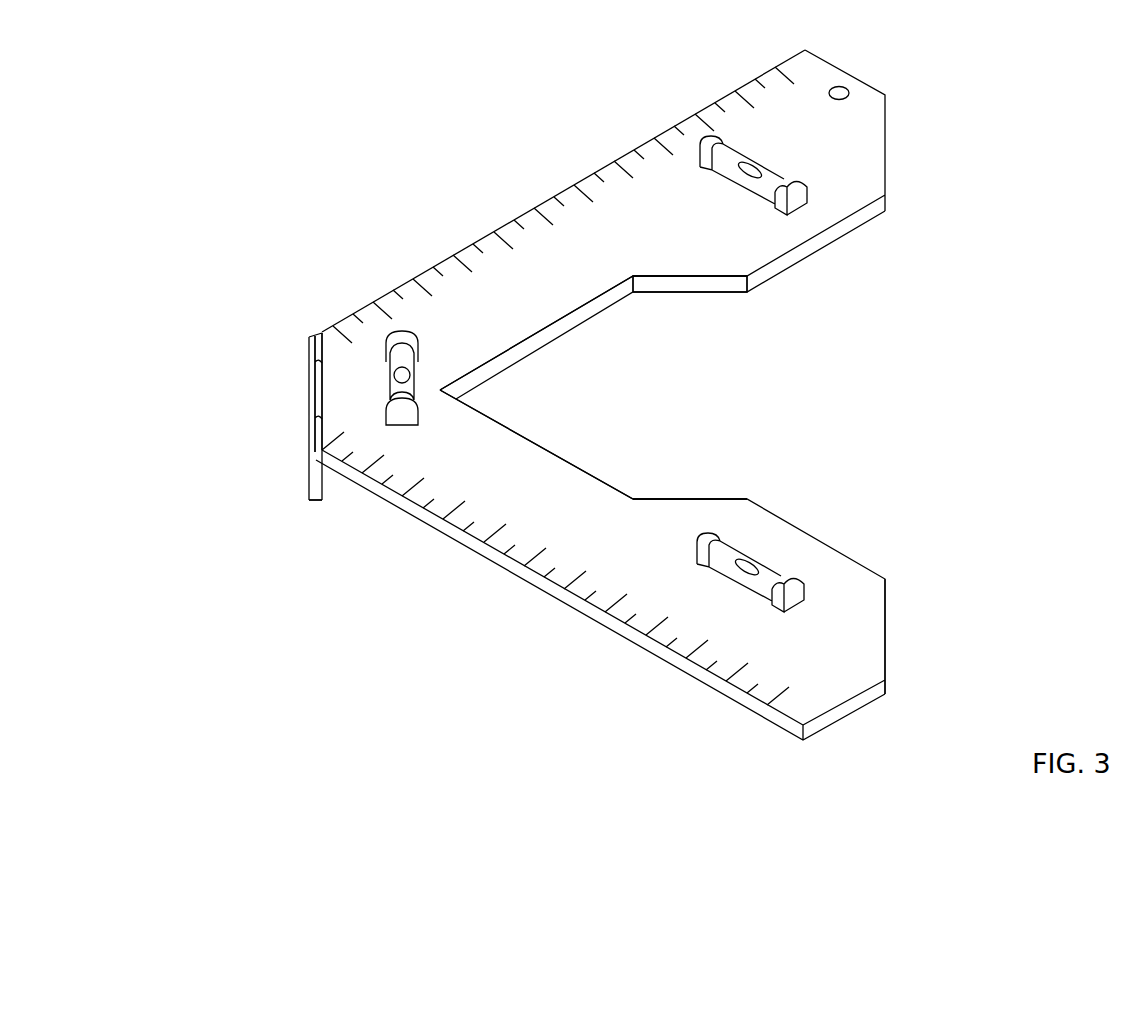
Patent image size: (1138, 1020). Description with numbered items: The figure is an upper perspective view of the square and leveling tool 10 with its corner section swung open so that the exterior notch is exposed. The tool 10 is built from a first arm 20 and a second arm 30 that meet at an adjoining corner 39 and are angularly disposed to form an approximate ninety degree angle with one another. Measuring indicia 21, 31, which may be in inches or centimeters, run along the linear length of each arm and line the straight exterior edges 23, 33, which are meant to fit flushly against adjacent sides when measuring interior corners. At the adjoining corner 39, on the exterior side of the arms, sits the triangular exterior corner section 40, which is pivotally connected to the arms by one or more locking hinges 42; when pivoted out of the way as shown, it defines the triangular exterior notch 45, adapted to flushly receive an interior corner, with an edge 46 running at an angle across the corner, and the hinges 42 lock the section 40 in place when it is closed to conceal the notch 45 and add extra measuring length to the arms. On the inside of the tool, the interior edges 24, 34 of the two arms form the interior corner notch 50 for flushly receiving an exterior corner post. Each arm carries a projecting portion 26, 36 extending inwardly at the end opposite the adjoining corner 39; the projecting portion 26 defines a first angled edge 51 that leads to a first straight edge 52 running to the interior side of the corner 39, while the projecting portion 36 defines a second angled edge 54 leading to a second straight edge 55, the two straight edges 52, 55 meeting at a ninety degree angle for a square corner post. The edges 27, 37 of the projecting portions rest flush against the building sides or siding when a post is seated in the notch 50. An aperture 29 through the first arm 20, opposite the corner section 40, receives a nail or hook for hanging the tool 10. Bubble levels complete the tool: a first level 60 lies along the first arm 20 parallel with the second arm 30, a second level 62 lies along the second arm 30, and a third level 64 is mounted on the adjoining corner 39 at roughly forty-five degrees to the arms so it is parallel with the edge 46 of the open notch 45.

The square and leveling tool 10 is at (230, 180).
The first arm 20 is at (622, 230).
The measuring indicia 21 is at (538, 225).
The exterior edge 23 is at (447, 255).
The interior edge 24 is at (727, 295).
The projecting portion 26 is at (807, 222).
The edge 27 is at (772, 270).
The aperture 29 is at (855, 88).
The second arm 30 is at (635, 545).
The measuring indicia 31 is at (507, 543).
The exterior edge 33 is at (637, 640).
The interior edge 34 is at (728, 498).
The projecting portion 36 is at (792, 557).
The edge 37 is at (870, 567).
The adjoining corner 39 is at (337, 382).
The exterior corner section 40 is at (309, 495).
The locking hinge 42 is at (310, 437).
The exterior notch 45 is at (243, 410).
The edge of the notch 46 is at (315, 407).
The interior corner notch 50 is at (725, 410).
The first angled edge 51 is at (683, 283).
The first straight edge 52 is at (500, 362).
The second angled edge 54 is at (672, 498).
The second straight edge 55 is at (557, 458).
The first level 60 is at (778, 172).
The second level 62 is at (757, 602).
The third level 64 is at (407, 357).